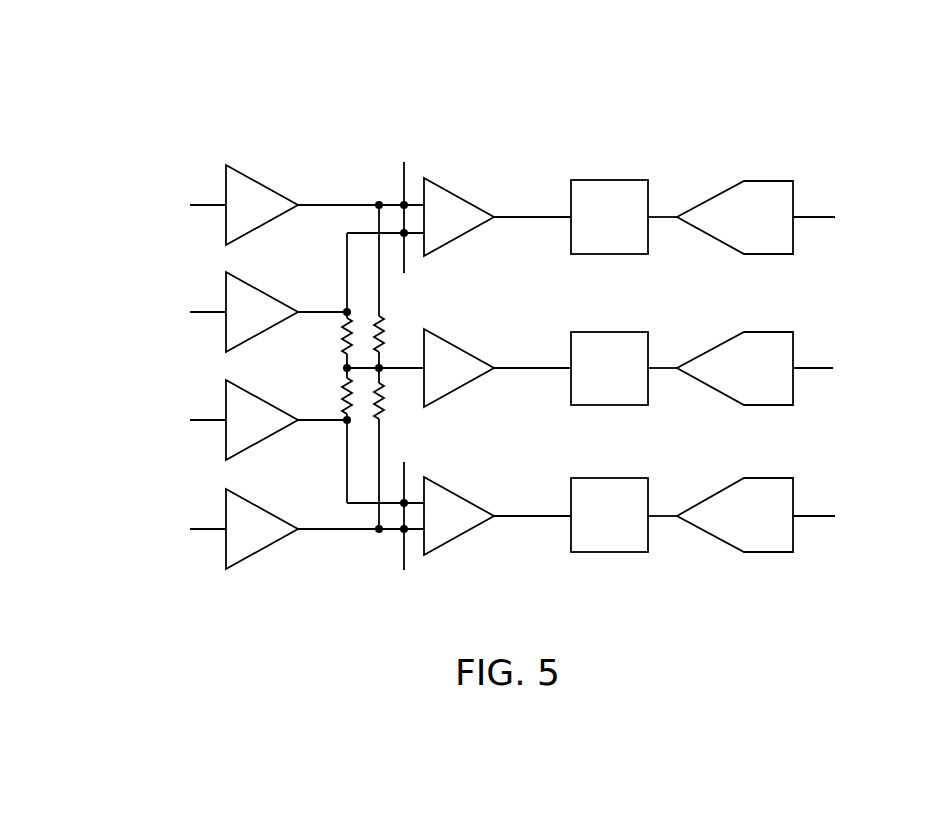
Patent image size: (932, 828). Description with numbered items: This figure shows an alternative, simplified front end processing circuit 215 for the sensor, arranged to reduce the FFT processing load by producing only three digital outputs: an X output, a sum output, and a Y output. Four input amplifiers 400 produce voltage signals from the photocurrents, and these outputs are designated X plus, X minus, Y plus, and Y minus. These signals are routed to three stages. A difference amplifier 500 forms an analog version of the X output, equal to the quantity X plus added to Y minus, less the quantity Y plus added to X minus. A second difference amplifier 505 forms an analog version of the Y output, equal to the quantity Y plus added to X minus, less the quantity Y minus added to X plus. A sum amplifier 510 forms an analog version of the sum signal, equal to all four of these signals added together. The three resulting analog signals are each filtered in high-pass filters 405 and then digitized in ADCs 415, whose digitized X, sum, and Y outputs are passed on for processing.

The front end processing circuit 215 is at (166, 114).
The amplifiers 400 is at (263, 174).
The high-pass filters 405 is at (611, 176).
The ADCs 415 is at (768, 177).
The difference amplifier 500 is at (461, 240).
The difference amplifier 505 is at (462, 538).
The sum amplifier 510 is at (462, 390).